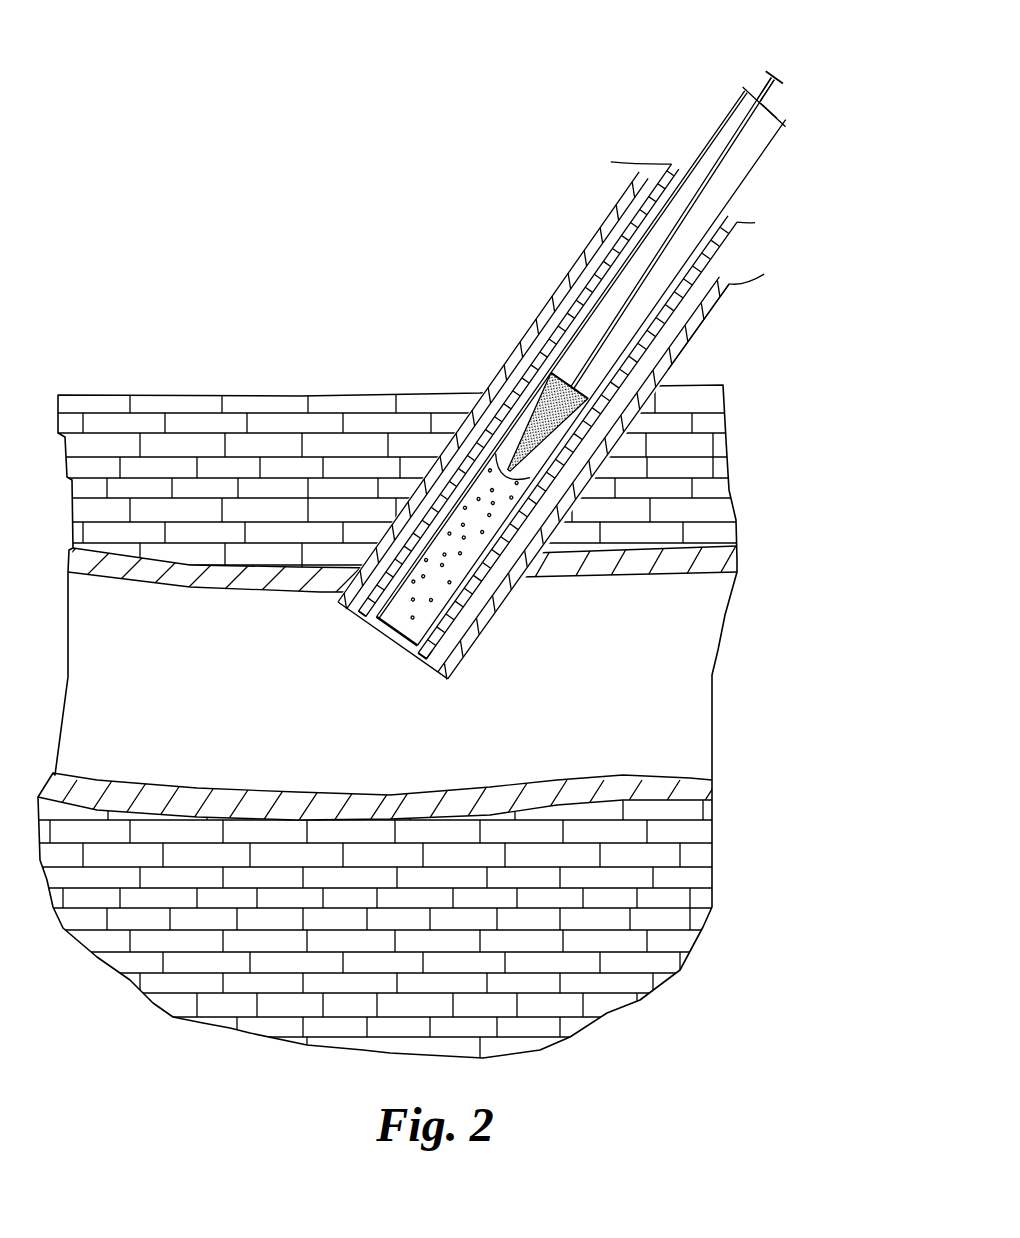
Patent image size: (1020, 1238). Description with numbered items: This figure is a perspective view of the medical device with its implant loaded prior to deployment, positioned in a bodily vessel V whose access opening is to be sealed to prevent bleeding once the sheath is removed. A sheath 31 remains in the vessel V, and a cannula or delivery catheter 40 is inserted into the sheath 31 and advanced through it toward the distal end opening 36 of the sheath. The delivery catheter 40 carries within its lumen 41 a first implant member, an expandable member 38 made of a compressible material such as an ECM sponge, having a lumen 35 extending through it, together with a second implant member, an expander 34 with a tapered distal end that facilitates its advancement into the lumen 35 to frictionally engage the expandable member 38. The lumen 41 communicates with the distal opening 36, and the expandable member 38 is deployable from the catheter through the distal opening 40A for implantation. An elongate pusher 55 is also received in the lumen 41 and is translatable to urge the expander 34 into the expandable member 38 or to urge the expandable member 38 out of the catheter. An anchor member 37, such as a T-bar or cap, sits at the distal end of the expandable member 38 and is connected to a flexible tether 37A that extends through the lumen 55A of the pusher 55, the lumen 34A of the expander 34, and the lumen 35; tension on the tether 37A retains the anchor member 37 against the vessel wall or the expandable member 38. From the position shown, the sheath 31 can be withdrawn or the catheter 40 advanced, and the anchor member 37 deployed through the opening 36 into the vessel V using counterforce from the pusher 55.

The sheath 31 is at (700, 335).
The expander 34 is at (533, 370).
The lumen of expander 34A is at (525, 418).
The lumen of expandable member 35 is at (455, 565).
The distal end opening of sheath 36 is at (360, 620).
The anchor member 37 is at (418, 640).
The tether 37A is at (770, 84).
The expandable member 38 is at (500, 545).
The delivery catheter 40 is at (660, 168).
The distal opening of delivery catheter 40A is at (424, 645).
The lumen of delivery catheter 41 is at (689, 159).
The pusher 55 is at (780, 133).
The lumen of pusher 55A is at (783, 101).
The bodily vessel V is at (155, 613).